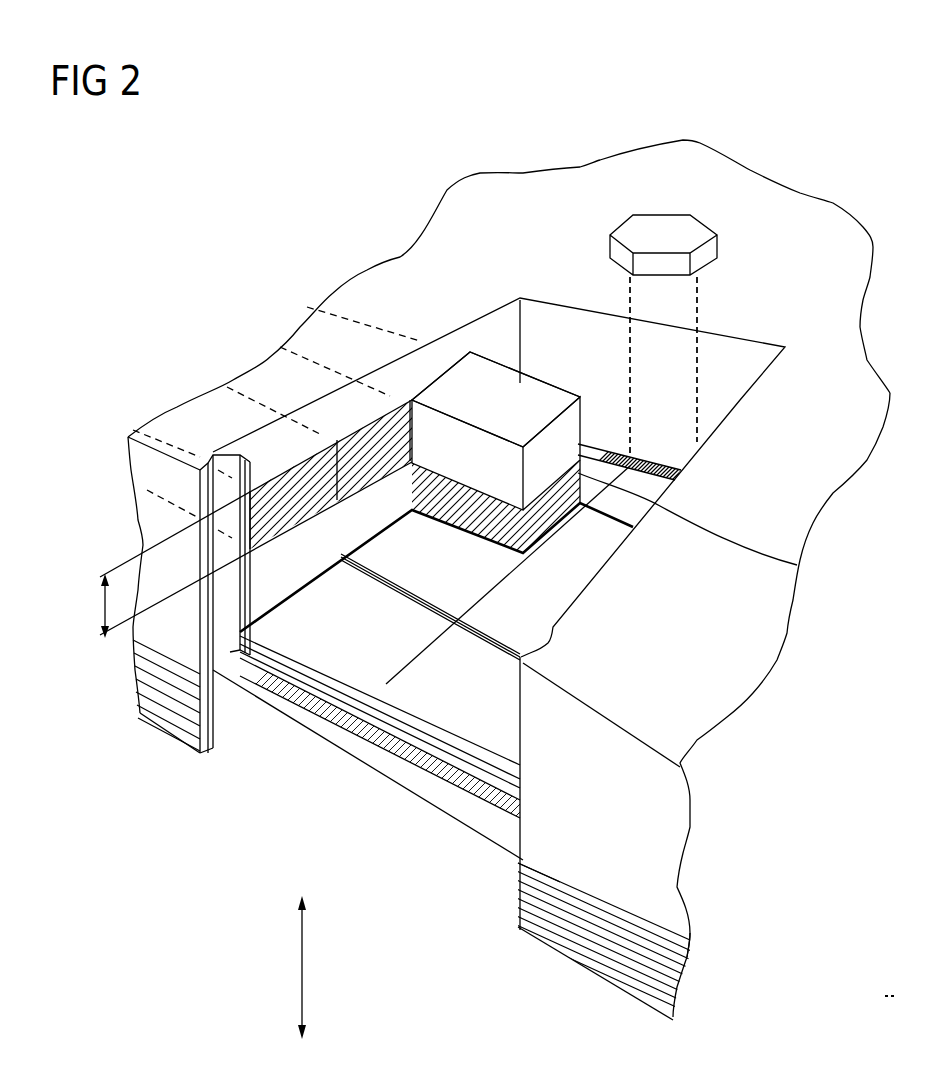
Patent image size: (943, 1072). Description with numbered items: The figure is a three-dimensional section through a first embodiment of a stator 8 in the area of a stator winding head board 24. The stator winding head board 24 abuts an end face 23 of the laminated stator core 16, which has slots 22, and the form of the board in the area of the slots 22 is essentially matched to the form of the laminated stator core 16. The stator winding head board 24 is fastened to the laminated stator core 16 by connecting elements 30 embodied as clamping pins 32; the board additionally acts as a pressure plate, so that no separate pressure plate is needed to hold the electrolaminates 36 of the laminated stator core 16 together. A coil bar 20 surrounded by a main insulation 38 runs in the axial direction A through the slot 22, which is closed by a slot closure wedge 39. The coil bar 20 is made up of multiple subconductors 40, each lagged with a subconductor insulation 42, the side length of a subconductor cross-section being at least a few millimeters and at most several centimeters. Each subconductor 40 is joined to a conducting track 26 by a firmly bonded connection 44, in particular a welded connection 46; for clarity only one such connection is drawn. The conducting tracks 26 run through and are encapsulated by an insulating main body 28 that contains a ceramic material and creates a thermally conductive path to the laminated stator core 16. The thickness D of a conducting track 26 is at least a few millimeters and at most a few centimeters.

The stator 8 is at (277, 166).
The laminated stator core 16 is at (573, 970).
The coil bar 20 is at (362, 665).
The slot 22 is at (569, 330).
The end face 23 is at (690, 932).
The stator winding head board 24 is at (660, 910).
The conducting track 26 is at (412, 396).
The insulating main body 28 is at (710, 630).
The connecting element 30 is at (667, 228).
The clamping pin 32 is at (667, 228).
The electrolaminates 36 is at (640, 993).
The main insulation 38 is at (411, 748).
The slot closure wedge 39 is at (453, 800).
The subconductor 40 is at (507, 392).
The subconductor insulation 42 is at (797, 563).
The firmly bonded connection 44 is at (458, 353).
The welded connection 46 is at (458, 353).
The thickness D is at (105, 608).
The axial direction A is at (307, 970).